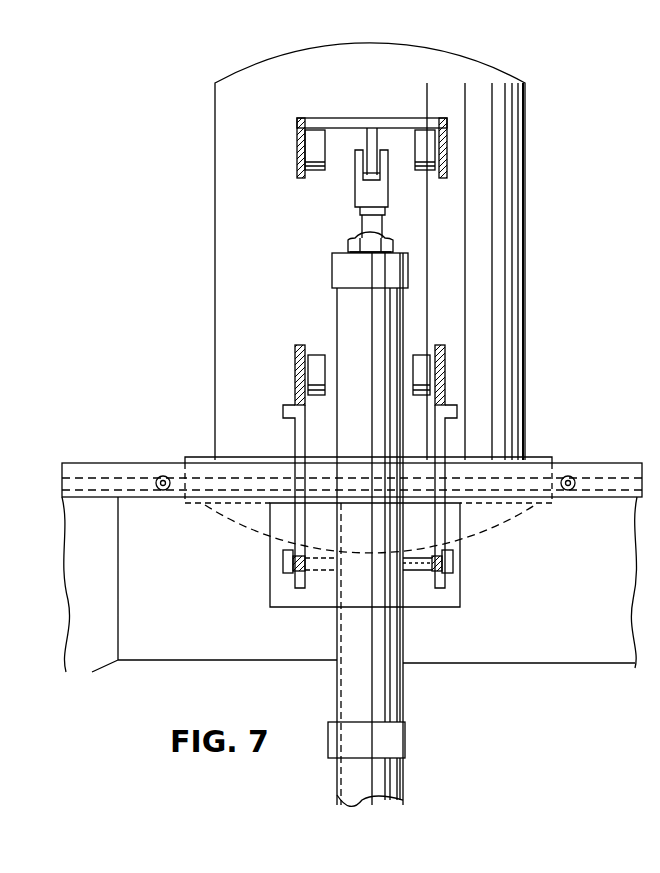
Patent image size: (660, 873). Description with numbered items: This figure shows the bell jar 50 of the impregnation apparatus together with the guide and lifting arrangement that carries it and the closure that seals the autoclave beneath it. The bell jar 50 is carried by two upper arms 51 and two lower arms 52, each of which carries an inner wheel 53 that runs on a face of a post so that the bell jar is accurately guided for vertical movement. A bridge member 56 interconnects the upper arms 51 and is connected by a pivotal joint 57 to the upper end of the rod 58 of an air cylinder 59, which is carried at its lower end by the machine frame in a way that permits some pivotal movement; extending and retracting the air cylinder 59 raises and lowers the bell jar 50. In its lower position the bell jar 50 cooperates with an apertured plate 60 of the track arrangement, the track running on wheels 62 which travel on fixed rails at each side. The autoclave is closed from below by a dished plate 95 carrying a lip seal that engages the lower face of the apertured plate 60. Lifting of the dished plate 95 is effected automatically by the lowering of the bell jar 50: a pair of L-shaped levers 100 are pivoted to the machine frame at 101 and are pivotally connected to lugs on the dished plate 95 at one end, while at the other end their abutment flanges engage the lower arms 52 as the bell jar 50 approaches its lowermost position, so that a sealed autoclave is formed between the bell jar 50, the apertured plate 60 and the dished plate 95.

The bell jar 50 is at (215, 298).
The upper arms 51 is at (297, 150).
The lower arms 52 is at (295, 362).
The inner wheel 53 is at (315, 170).
The bridge member 56 is at (395, 120).
The pivotal joint 57 is at (385, 185).
The rod 58 is at (362, 228).
The air cylinder 59 is at (378, 318).
The apertured plate 60 is at (203, 485).
The wheels 62 is at (160, 477).
The dished plate 95 is at (240, 525).
The L-shaped levers 100 is at (298, 542).
The pivot 101 is at (453, 565).